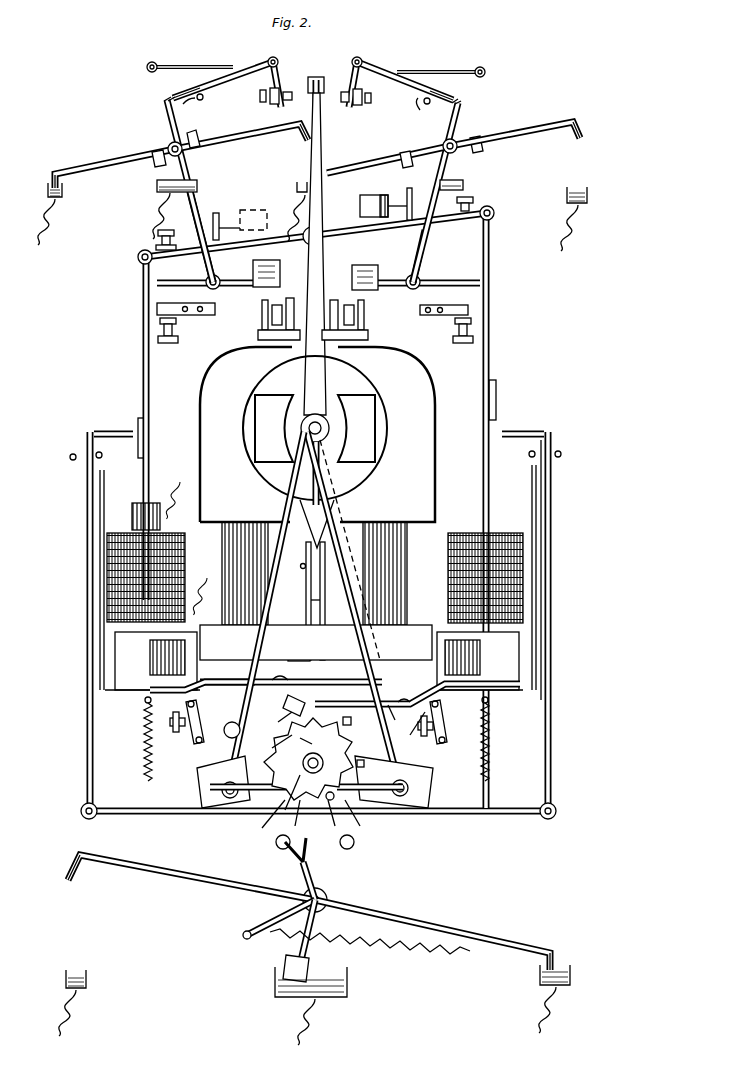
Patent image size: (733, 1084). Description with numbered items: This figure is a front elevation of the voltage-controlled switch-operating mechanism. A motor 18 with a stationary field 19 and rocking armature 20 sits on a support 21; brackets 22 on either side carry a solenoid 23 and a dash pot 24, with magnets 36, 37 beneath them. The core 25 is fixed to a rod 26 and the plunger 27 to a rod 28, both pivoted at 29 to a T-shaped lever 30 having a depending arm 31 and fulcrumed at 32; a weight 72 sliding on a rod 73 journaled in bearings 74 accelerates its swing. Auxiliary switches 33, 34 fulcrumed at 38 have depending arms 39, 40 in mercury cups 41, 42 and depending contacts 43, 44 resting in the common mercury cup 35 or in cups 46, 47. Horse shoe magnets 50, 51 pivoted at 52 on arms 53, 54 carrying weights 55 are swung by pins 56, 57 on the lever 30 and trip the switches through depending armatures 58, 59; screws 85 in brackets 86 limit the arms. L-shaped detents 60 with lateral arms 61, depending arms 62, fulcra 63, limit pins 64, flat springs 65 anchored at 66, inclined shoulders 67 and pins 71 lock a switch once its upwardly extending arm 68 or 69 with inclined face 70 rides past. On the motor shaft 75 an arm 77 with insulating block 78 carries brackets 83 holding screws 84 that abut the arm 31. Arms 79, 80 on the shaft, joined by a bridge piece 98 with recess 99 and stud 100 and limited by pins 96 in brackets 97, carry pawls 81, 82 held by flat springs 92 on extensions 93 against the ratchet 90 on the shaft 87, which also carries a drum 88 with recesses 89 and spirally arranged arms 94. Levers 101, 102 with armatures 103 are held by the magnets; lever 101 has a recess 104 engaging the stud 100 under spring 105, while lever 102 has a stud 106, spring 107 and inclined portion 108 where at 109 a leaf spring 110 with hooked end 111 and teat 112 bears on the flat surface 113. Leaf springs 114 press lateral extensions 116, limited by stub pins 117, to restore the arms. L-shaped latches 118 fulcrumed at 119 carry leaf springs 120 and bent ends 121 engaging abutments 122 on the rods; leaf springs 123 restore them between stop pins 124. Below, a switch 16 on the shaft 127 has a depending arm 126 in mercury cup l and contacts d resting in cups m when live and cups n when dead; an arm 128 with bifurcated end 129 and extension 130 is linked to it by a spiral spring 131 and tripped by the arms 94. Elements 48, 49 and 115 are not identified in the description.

The switch 16 is at (400, 928).
The motor 18 is at (430, 452).
The stationary field 19 is at (430, 392).
The rocking armature 20 is at (372, 477).
The support 21 is at (410, 632).
The brackets 22 is at (112, 688).
The solenoid 23 is at (110, 587).
The dash pot 24 is at (520, 592).
The core 25 is at (132, 515).
The vertically-extending rod 26 is at (142, 385).
The plunger 27 is at (552, 534).
The vertical rod 28 is at (490, 370).
The pivotal connection 29 is at (139, 261).
The T-shaped lever 30 is at (403, 226).
The depending arm 31 is at (333, 290).
The central point 32 is at (307, 244).
The auxiliary switch 33 is at (86, 163).
The auxiliary switch 34 is at (545, 128).
The mercury cup 35 is at (297, 182).
The magnet 36 is at (150, 657).
The magnet 37 is at (482, 655).
The fulcrum 38 is at (170, 145).
The depending arm 39 is at (188, 168).
The depending arm 40 is at (447, 168).
The mercury cup 41 is at (160, 193).
The mercury cup 42 is at (465, 185).
The depending contacts 43 is at (50, 181).
The depending contacts 44 is at (582, 130).
The mercury cup 46 is at (49, 198).
The mercury cup 47 is at (588, 198).
The spring 48 is at (170, 496).
The spring 49 is at (202, 592).
The horse shoe magnet 50 is at (195, 206).
The horse shoe magnet 51 is at (425, 258).
The pivot 52 is at (219, 278).
The arm 53 is at (160, 286).
The arm 54 is at (482, 283).
The adjustably movable weights 55 is at (257, 284).
The adjustable pin 56 is at (156, 240).
The adjustable pin 57 is at (474, 204).
The depending armatures 58 is at (195, 139).
The depending armatures 59 is at (426, 150).
The L-shaped detents 60 is at (250, 68).
The lateral arm 61 is at (182, 92).
The depending arm 62 is at (280, 78).
The fulcrum 63 is at (277, 58).
The pins 64 is at (204, 97).
The springs 65 is at (188, 68).
The connection 66 is at (156, 63).
The inclined shoulder 67 is at (168, 98).
The upwardly extending arm 68 is at (165, 102).
The upwardly extending arm 69 is at (460, 106).
The inclined faces 70 is at (303, 112).
The pins 71 is at (315, 105).
The weight 72 is at (385, 196).
The rod 73 is at (362, 208).
The bearings 74 is at (220, 222).
The motor shaft 75 is at (326, 420).
The upwardly extending arm 77 is at (324, 338).
The insulating block 78 is at (325, 84).
The arm 79 is at (264, 575).
The arm 80 is at (380, 580).
The pawl 81 is at (261, 818).
The pawl 82 is at (367, 818).
The laterally extending brackets 83 is at (319, 332).
The adjustable screws 84 is at (262, 320).
The adjustable screws 85 is at (158, 334).
The brackets 86 is at (187, 315).
The rotatable shaft 87 is at (325, 764).
The drum 88 is at (317, 825).
The peripheral recesses 89 is at (355, 828).
The ratchet 90 is at (297, 778).
The flat springs 92 is at (216, 795).
The L-shaped depending extensions 93 is at (198, 778).
The arms 94 is at (360, 854).
The pins 96 is at (183, 740).
The brackets 97 is at (198, 712).
The bridge piece 98 is at (375, 683).
The central recess 99 is at (287, 702).
The stud 100 is at (325, 681).
The lever 101 is at (138, 709).
The lever 102 is at (486, 704).
The armatures 103 is at (185, 690).
The recess 104 is at (287, 672).
The spiral spring 105 is at (137, 742).
The depending stud 106 is at (308, 733).
The spring 107 is at (488, 740).
The inclined portion 108 is at (411, 731).
The securing point 109 is at (412, 692).
The leaf spring 110 is at (397, 719).
The hooked end 111 is at (309, 638).
The teat 112 is at (272, 750).
The flat surface 113 is at (365, 703).
The leaf springs 114 is at (324, 598).
The plate 115 is at (291, 649).
The lateral extensions 116 is at (317, 495).
The stub pins 117 is at (302, 601).
The L-shaped latches 118 is at (88, 748).
The fulcrum 119 is at (83, 817).
The leaf springs 120 is at (471, 815).
The bent end 121 is at (88, 431).
The abutment 122 is at (136, 420).
The leaf springs 123 is at (100, 506).
The stop pins 124 is at (70, 460).
The depending arm 126 is at (284, 962).
The shaft 127 is at (328, 898).
The arms 128 is at (312, 880).
The bifurcated ends 129 is at (285, 860).
The extensions 130 is at (262, 922).
The spiral springs 131 is at (408, 953).
The storage battery contact d is at (66, 882).
The mercury cup l is at (280, 997).
The mercury cup m is at (64, 985).
The mercury cup n is at (572, 976).